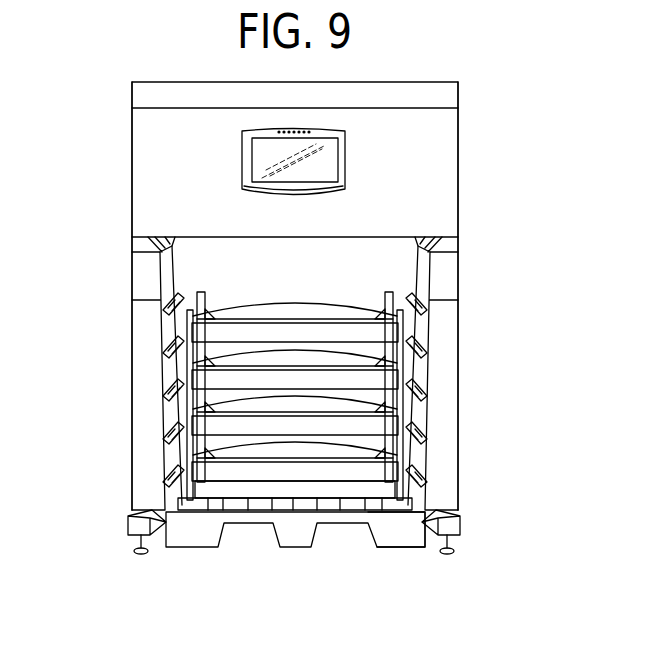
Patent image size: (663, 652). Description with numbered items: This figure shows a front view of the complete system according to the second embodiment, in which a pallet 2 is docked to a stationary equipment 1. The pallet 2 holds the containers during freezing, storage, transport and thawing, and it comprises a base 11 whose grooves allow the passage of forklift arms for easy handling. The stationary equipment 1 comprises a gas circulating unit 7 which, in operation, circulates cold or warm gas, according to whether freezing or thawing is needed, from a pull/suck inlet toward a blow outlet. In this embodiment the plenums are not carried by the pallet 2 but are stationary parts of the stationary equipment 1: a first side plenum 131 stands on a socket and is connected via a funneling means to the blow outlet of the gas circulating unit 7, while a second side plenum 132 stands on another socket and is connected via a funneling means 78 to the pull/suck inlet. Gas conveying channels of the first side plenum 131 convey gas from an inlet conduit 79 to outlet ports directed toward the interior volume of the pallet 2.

The stationary equipment 1 is at (470, 157).
The pallet 2 is at (303, 553).
The gas circulating unit 7 is at (368, 157).
The base 11 is at (398, 532).
The funneling means 78 is at (442, 278).
The inlet conduit 79 is at (150, 277).
The first side plenum 131 is at (130, 347).
The second side plenum 132 is at (462, 352).